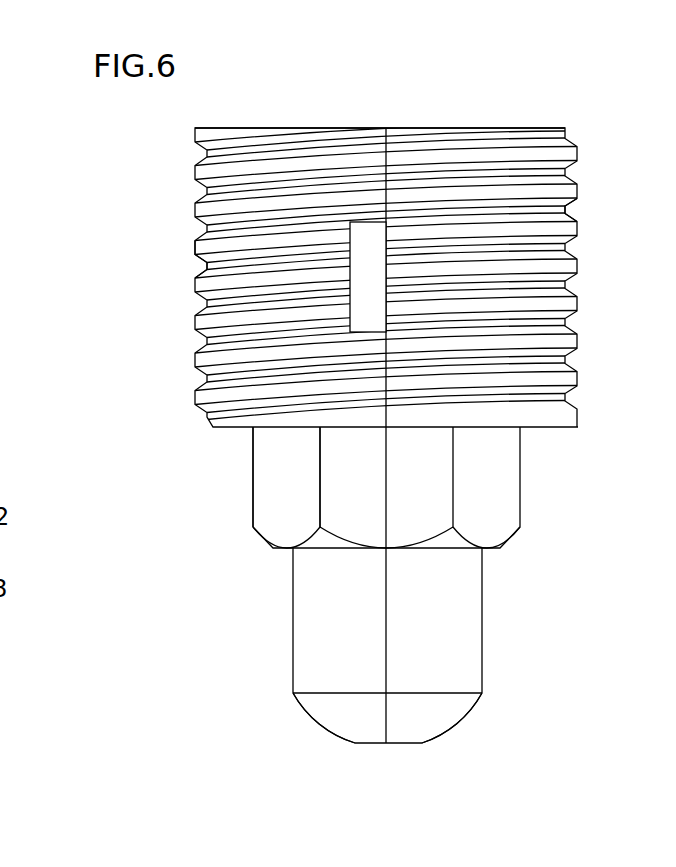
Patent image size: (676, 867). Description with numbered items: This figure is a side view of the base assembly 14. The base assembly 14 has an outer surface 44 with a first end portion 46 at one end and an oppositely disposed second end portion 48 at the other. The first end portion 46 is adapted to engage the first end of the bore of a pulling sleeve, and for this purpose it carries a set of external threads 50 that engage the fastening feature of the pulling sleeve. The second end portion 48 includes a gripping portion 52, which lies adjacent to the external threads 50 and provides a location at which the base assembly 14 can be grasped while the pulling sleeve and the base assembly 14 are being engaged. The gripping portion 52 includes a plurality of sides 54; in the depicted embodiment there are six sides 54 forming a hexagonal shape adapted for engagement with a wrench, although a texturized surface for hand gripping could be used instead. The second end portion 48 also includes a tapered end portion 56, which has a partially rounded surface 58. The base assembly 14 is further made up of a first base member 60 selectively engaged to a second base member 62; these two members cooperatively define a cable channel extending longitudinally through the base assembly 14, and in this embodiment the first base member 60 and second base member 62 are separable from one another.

The base assembly 14 is at (105, 182).
The outer surface 44 is at (183, 435).
The first end portion 46 is at (181, 254).
The second end portion 48 is at (269, 570).
The external threads 50 is at (578, 232).
The gripping portion 52 is at (546, 480).
The sides 54 is at (268, 488).
The tapered end portion 56 is at (322, 728).
The partially rounded surface 58 is at (453, 725).
The first base member 60 is at (261, 117).
The second base member 62 is at (486, 117).